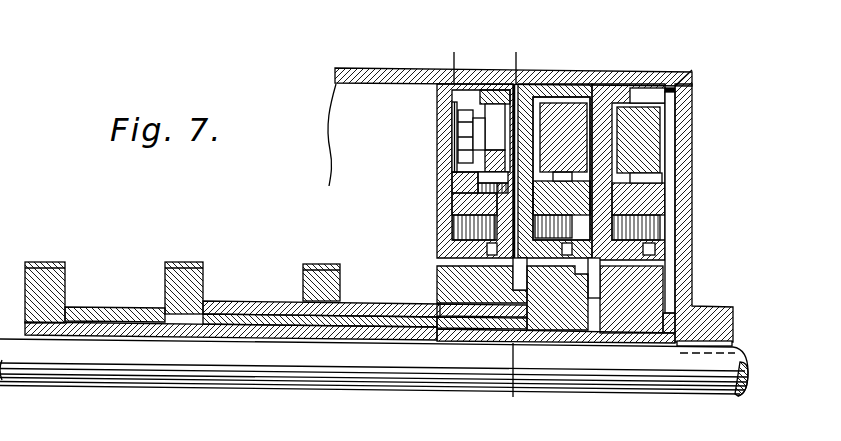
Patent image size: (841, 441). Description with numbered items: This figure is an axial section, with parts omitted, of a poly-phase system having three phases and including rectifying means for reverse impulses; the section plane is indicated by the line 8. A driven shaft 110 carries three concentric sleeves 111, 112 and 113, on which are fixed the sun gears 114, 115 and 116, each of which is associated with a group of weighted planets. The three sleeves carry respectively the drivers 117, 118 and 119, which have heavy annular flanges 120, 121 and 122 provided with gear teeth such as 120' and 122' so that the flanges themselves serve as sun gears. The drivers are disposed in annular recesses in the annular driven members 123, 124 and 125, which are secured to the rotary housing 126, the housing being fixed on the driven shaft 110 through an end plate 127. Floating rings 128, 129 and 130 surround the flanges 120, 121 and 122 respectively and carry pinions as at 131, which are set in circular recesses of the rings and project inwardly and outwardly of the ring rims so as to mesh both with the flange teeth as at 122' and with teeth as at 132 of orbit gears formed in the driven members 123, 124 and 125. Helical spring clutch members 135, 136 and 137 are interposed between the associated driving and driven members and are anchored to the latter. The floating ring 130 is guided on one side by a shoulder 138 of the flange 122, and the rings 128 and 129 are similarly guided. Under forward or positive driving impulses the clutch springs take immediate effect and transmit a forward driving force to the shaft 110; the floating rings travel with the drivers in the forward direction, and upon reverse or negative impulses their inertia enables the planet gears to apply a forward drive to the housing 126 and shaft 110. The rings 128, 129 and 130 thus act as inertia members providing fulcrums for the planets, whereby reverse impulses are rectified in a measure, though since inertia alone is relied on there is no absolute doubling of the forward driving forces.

The section line 8- 8 is at (484, 226).
The driven shaft 110 is at (172, 362).
The concentric sleeve 111 is at (112, 336).
The concentric sleeve 112 is at (248, 337).
The concentric sleeve 113 is at (297, 303).
The sun gear 114 is at (65, 287).
The sun gear 115 is at (203, 278).
The sun gear 116 is at (343, 284).
The driver 117 is at (642, 340).
The driver 118 is at (577, 344).
The driver 119 is at (460, 303).
The annular flange 120 is at (698, 202).
The gear teeth 120' is at (683, 171).
The annular flange 121 is at (578, 157).
The annular flange 122 is at (438, 194).
The gear teeth 122' is at (444, 183).
The annular driven member 123 is at (610, 100).
The annular driven member 124 is at (546, 88).
The annular driven member 125 is at (437, 130).
The rotary housing 126 is at (662, 75).
The end plate 127 is at (684, 229).
The floating ring 128 is at (672, 106).
The floating ring 129 is at (573, 100).
The floating ring 130 is at (444, 103).
The pinion 131 is at (495, 88).
The orbit gear teeth 132 is at (515, 80).
The helical spring clutch member 135 is at (664, 222).
The helical spring clutch member 136 is at (553, 262).
The helical spring clutch member 137 is at (455, 228).
The shoulder 138 is at (458, 169).